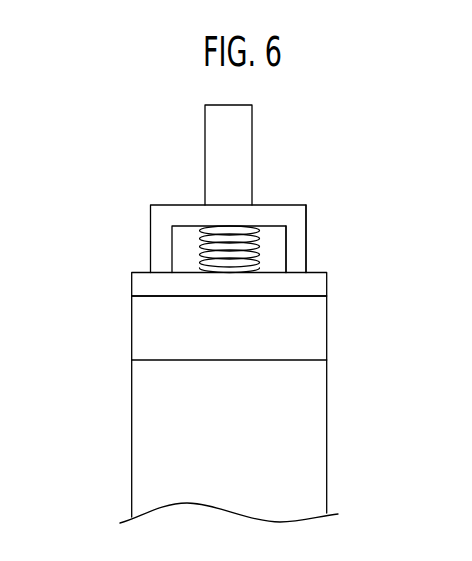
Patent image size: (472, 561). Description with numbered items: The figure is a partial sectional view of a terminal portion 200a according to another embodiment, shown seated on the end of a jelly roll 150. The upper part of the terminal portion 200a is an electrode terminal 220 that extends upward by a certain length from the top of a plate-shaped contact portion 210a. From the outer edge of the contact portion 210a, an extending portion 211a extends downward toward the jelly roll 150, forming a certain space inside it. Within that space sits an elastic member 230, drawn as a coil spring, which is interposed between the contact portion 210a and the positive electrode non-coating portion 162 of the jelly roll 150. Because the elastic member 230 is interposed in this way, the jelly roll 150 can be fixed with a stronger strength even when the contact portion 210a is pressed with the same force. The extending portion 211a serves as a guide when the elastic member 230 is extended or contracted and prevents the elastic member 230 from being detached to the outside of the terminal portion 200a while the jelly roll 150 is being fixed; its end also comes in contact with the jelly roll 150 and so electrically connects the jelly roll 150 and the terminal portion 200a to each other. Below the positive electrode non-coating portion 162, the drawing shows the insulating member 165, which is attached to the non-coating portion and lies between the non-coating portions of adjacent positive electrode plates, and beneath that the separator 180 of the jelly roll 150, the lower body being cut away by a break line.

The jelly roll 150 is at (124, 438).
The positive electrode non-coating portion 162 is at (310, 283).
The insulating member 165 is at (310, 344).
The separator 180 is at (310, 423).
The terminal portion 200a is at (162, 200).
The contact portion 210a is at (294, 204).
The extending portion 211a is at (307, 236).
The electrode terminal 220 is at (253, 137).
The elastic member 230 is at (199, 243).